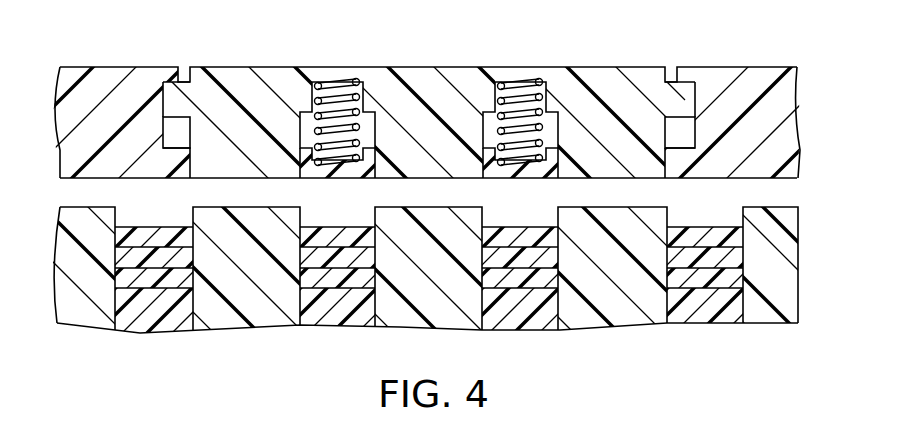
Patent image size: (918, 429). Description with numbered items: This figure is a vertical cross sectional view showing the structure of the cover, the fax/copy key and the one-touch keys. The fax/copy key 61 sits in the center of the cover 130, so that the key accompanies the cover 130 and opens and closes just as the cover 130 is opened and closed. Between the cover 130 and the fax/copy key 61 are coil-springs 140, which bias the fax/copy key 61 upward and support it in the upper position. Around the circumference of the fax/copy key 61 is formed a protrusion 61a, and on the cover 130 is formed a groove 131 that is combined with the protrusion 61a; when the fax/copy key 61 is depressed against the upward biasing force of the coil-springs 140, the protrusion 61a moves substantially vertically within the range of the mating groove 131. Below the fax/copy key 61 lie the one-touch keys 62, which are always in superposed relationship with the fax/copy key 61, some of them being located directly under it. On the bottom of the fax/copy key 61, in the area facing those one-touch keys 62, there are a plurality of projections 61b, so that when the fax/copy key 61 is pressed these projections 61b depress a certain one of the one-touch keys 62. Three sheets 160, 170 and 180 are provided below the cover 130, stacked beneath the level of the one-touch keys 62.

The fax/copy key 61 is at (432, 77).
The protrusion 61a is at (178, 103).
The projections 61b is at (222, 176).
The cover 130 is at (102, 75).
The groove 131 is at (167, 128).
The coil-springs 140 is at (332, 85).
The one-touch keys 62 is at (97, 300).
The sheet 160 is at (740, 229).
The sheet 170 is at (735, 252).
The sheet 180 is at (745, 272).